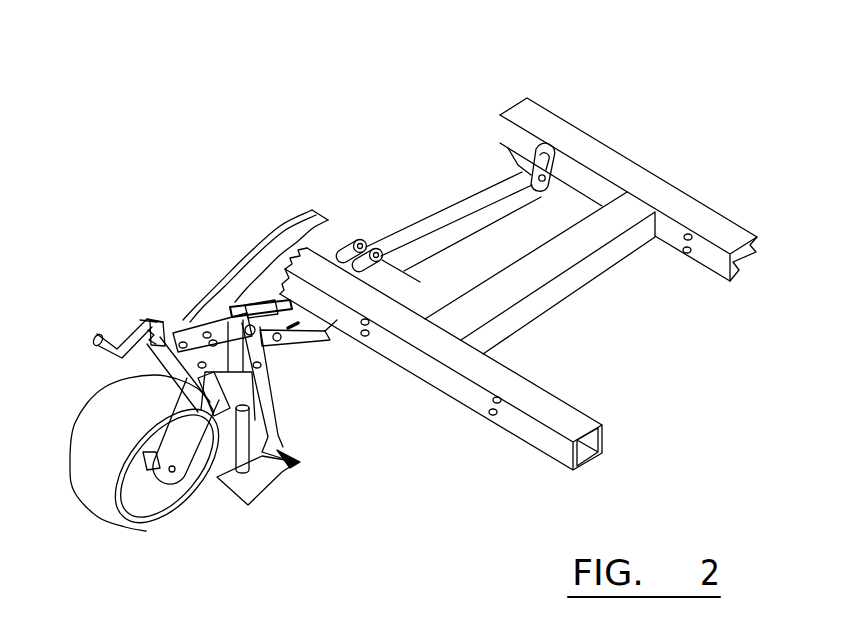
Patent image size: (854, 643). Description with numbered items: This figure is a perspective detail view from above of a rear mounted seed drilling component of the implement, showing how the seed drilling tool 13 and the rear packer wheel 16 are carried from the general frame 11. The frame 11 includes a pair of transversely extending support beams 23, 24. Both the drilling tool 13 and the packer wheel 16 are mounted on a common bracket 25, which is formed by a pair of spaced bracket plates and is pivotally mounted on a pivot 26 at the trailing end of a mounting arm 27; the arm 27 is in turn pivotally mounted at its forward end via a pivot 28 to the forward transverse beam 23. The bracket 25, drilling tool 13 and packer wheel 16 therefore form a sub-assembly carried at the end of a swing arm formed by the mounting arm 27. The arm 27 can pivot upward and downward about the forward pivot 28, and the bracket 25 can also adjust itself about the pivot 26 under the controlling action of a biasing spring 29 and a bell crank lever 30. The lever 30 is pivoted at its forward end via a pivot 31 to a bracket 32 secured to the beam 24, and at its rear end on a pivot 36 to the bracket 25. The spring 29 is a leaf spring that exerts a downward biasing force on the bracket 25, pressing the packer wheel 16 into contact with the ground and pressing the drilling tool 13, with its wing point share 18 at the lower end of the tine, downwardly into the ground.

The general frame 11 is at (553, 271).
The seed drilling tool 13 is at (278, 420).
The rear packer wheel 16 is at (98, 492).
The wing point share 18 is at (260, 487).
The forward transverse beam 23 is at (670, 196).
The support beam 24 is at (543, 400).
The common bracket 25 is at (188, 317).
The pivot 26 is at (280, 341).
The mounting arm 27 is at (457, 210).
The pivot 28 is at (545, 178).
The biasing spring 29 is at (298, 227).
The bell crank lever 30 is at (277, 298).
The pivot 31 is at (418, 279).
The bracket 32 is at (340, 238).
The pivot 36 is at (288, 343).